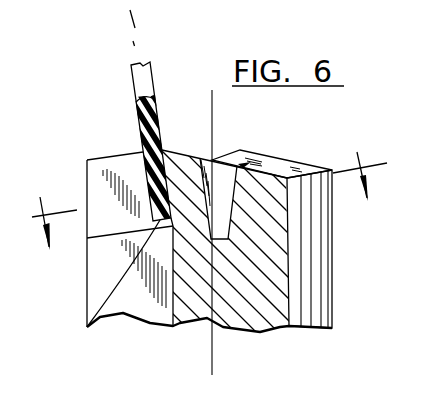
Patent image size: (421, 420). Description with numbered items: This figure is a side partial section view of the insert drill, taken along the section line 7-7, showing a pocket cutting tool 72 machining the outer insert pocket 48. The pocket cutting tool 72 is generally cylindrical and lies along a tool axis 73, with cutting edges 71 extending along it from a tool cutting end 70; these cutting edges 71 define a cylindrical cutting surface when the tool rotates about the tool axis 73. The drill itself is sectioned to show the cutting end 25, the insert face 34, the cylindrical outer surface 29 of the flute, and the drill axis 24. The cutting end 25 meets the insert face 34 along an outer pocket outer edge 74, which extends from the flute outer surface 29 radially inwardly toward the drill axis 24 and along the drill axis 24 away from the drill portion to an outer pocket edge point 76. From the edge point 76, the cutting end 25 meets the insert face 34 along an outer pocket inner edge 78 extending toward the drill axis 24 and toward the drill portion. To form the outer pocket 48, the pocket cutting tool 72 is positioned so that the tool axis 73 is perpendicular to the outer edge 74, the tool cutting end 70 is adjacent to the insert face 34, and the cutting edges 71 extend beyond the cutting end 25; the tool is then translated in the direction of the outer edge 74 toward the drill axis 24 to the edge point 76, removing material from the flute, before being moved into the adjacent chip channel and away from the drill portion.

The section line 7- 7 is at (209, 201).
The drill axis 24 is at (212, 362).
The cutting end 25 is at (295, 165).
The cylindrical outer surface 29 is at (87, 308).
The insert face 34 is at (107, 268).
The outer insert pocket 48 is at (103, 177).
The tool cutting end 70 is at (87, 325).
The cutting edges 71 is at (139, 118).
The pocket cutting tool 72 is at (132, 72).
The tool axis 73 is at (135, 27).
The outer pocket outer edge 74 is at (110, 156).
The outer pocket edge point 76 is at (173, 149).
The outer pocket inner edge 78 is at (191, 157).